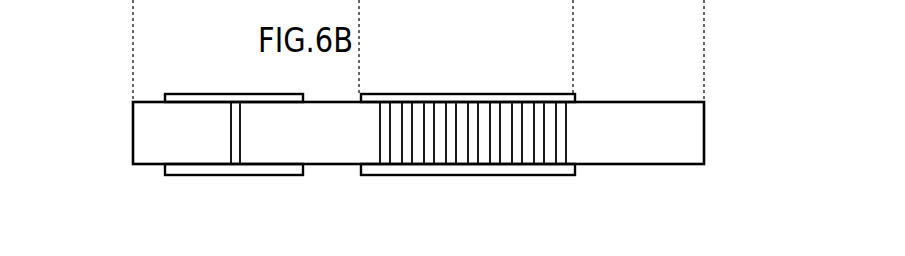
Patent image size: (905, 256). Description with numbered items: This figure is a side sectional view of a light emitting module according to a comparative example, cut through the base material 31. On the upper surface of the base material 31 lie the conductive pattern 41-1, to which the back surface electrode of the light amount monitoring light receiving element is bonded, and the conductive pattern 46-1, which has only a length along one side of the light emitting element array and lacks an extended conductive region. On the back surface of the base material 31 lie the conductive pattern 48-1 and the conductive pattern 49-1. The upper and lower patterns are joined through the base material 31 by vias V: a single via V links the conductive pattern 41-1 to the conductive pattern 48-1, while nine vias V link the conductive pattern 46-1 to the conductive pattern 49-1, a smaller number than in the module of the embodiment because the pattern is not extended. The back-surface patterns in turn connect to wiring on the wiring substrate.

The base material 31 is at (705, 130).
The conductive pattern 41-1 is at (188, 94).
The conductive pattern 48-1 is at (233, 175).
The conductive pattern 46-1 is at (458, 93).
The conductive pattern 49-1 is at (423, 175).
The vias V is at (230, 135).